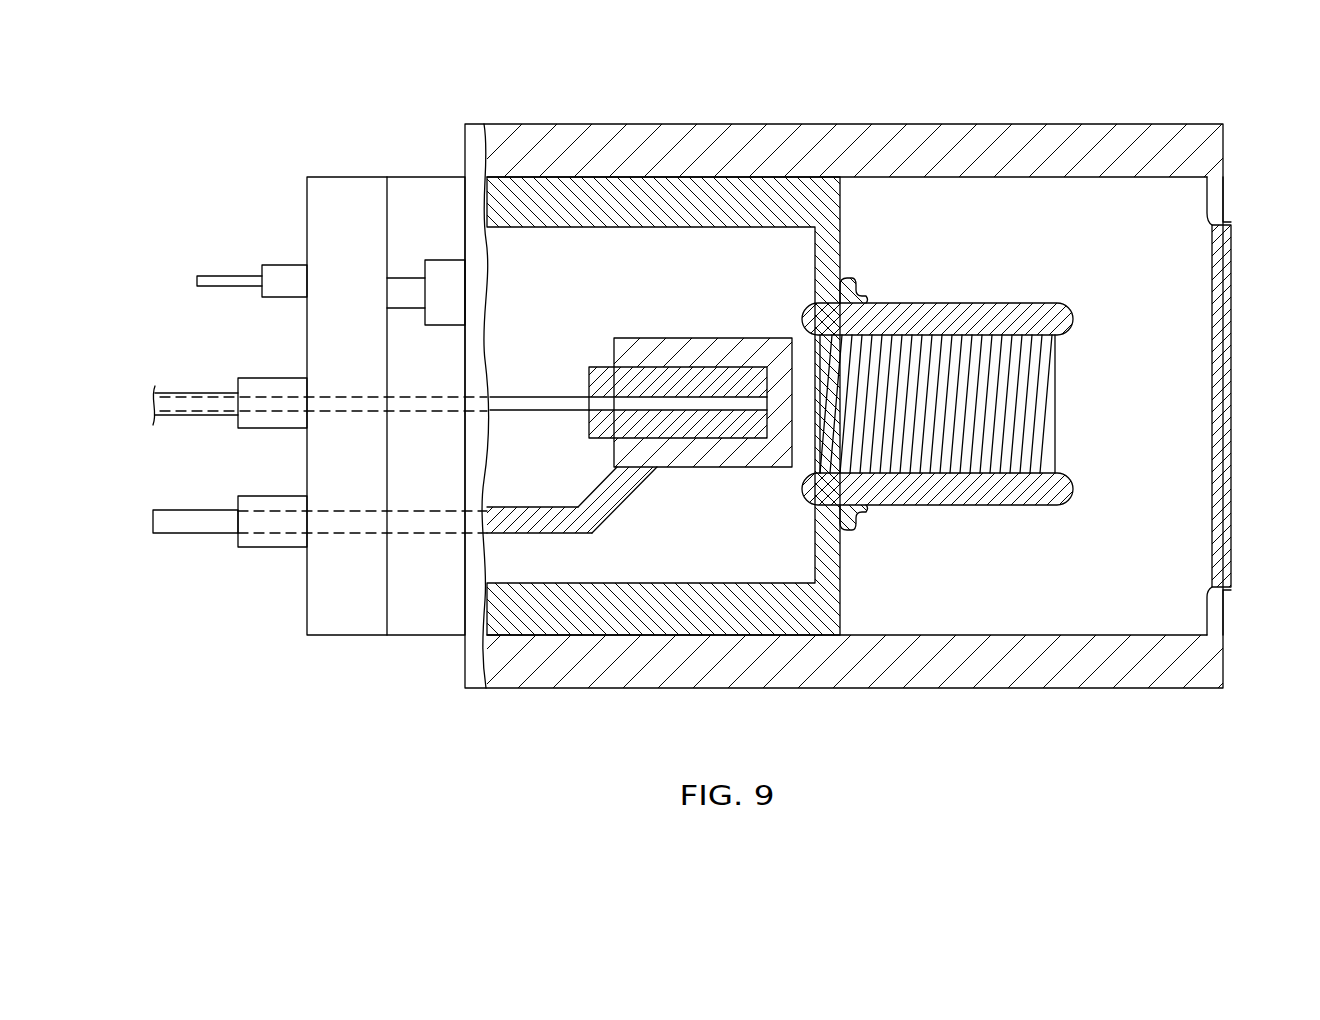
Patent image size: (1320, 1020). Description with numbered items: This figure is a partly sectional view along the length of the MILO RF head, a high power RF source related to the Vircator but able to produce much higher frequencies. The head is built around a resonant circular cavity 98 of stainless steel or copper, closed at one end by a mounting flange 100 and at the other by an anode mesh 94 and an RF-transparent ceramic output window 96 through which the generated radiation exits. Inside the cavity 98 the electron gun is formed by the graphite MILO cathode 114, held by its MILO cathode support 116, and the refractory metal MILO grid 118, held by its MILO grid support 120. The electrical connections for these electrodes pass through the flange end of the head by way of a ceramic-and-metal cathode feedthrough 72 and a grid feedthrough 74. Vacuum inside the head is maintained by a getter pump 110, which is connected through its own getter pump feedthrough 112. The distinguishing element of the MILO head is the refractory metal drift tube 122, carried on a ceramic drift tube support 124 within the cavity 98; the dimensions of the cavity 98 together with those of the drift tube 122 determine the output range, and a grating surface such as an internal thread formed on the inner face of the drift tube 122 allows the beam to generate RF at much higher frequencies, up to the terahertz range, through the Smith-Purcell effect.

The cathode feedthrough 72 is at (175, 398).
The grid feedthrough 74 is at (177, 522).
The anode mesh 94 is at (1212, 573).
The output window 96 is at (1230, 283).
The resonant circular cavity 98 is at (1158, 203).
The mounting flange 100 is at (403, 622).
The getter pump 110 is at (443, 268).
The getter pump feedthrough 112 is at (223, 276).
The MILO cathode 114 is at (592, 422).
The MILO cathode support 116 is at (503, 395).
The MILO grid 118 is at (715, 355).
The MILO grid support 120 is at (612, 503).
The drift tube 122 is at (938, 303).
The drift tube support 124 is at (800, 193).